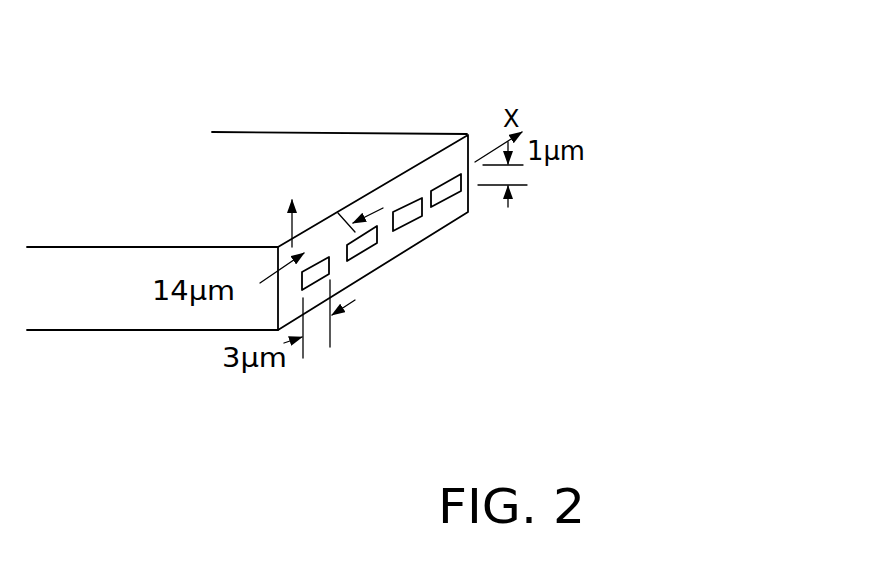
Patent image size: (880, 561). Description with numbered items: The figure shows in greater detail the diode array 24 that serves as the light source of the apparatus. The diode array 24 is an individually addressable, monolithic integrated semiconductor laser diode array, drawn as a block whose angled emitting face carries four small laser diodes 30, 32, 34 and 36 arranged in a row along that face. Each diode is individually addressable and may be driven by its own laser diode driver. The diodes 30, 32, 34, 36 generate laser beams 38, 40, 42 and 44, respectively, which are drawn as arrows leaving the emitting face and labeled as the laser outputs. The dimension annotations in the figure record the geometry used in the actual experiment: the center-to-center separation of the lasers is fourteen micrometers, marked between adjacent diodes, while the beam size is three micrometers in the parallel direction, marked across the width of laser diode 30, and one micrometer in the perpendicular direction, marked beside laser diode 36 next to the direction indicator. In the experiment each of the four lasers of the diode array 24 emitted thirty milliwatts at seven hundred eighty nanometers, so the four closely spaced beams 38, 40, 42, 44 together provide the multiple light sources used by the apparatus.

The diode array 24 is at (260, 145).
The laser diode 30 is at (313, 291).
The laser diode 32 is at (357, 251).
The laser diode 34 is at (400, 211).
The laser diode 36 is at (460, 183).
The laser beam 38 is at (507, 341).
The laser beam 40 is at (552, 319).
The laser beam 42 is at (576, 182).
The laser beam 44 is at (639, 163).